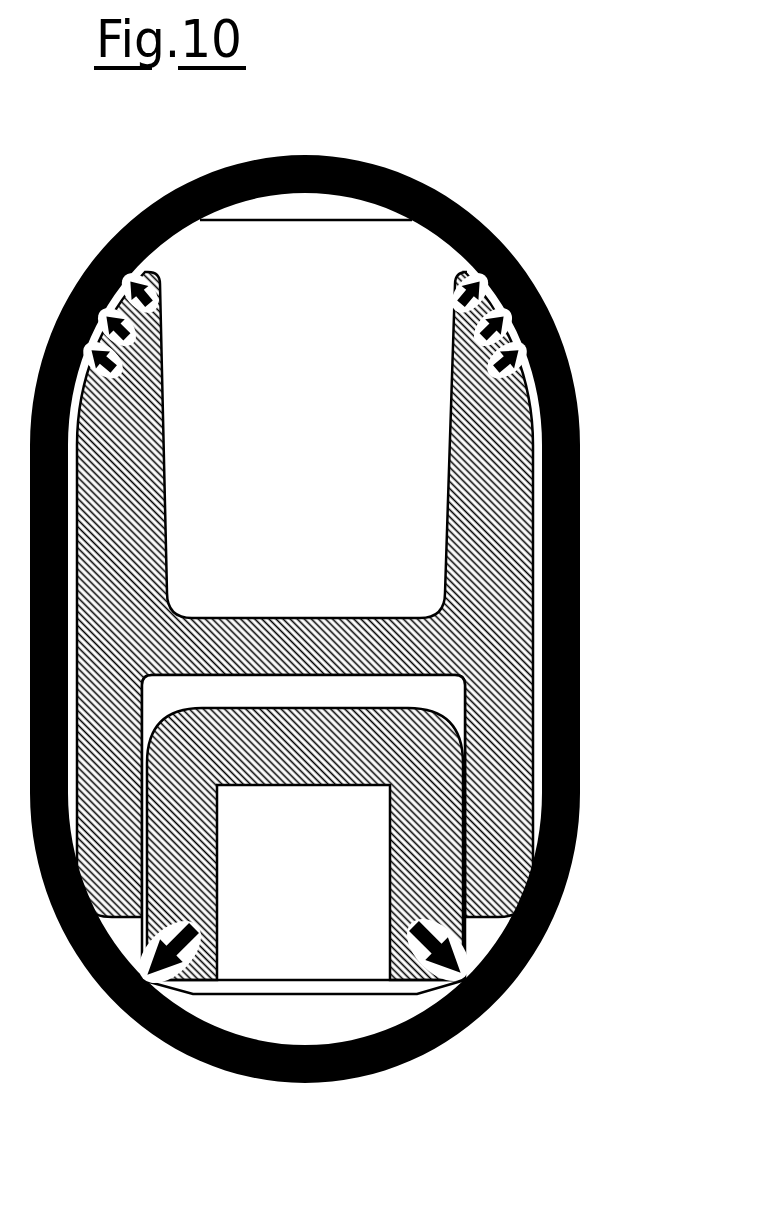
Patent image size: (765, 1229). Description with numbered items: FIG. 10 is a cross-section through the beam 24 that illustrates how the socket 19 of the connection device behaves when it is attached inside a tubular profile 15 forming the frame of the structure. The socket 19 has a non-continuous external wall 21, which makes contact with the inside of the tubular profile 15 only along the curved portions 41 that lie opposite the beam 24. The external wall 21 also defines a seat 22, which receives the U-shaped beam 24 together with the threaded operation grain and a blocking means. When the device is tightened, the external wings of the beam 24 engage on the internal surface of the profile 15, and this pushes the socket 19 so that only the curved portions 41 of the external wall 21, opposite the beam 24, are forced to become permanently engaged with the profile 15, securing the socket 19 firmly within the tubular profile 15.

The tubular profile 15 is at (581, 464).
The socket 19 is at (513, 558).
The external wall 21 is at (528, 603).
The seat 22 is at (147, 711).
The U-beam 24 is at (210, 967).
The curved portions 41 is at (130, 311).